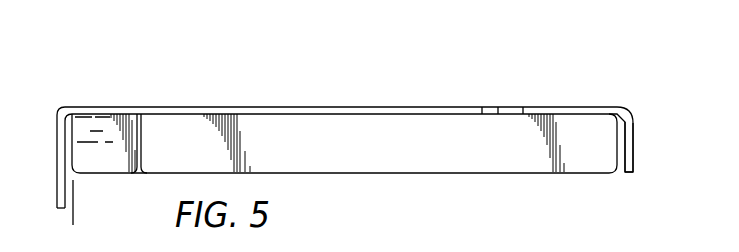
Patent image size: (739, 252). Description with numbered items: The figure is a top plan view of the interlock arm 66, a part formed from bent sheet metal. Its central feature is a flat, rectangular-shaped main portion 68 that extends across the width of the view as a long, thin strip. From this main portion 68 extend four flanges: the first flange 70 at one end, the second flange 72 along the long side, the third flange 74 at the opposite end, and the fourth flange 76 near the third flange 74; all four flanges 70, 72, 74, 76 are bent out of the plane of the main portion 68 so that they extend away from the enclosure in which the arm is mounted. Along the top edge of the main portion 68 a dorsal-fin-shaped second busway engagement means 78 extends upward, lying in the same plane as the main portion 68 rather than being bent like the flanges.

The interlock arm 66 is at (414, 72).
The main portion 68 is at (273, 107).
The first flange 70 is at (634, 148).
The second flange 72 is at (432, 167).
The third flange 74 is at (62, 209).
The fourth flange 76 is at (106, 167).
The second busway engagement means 78 is at (511, 107).